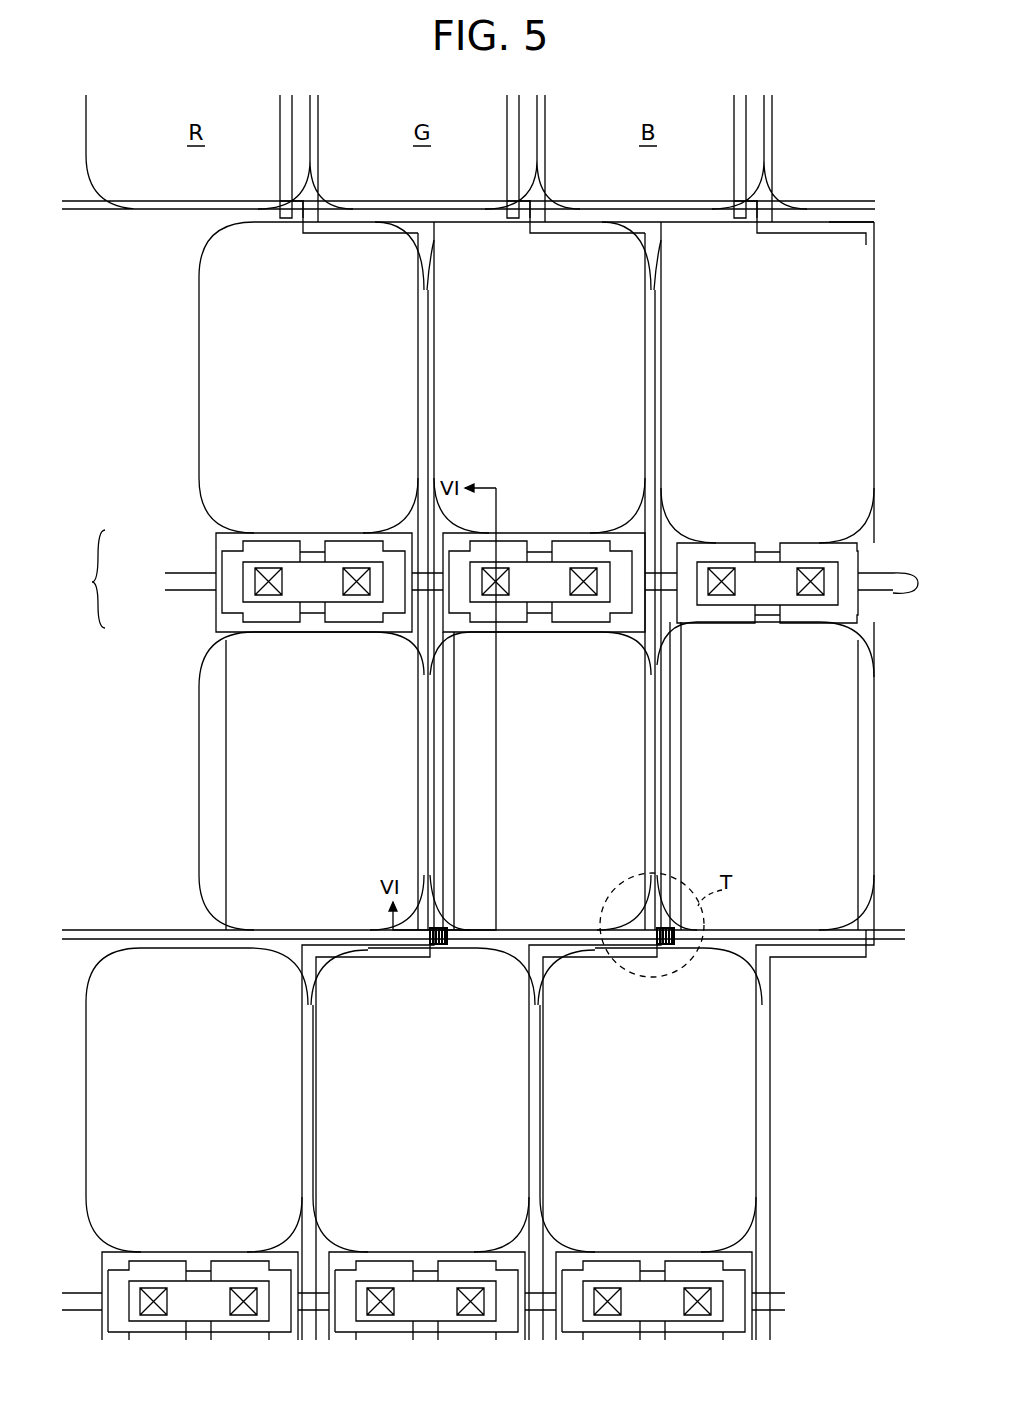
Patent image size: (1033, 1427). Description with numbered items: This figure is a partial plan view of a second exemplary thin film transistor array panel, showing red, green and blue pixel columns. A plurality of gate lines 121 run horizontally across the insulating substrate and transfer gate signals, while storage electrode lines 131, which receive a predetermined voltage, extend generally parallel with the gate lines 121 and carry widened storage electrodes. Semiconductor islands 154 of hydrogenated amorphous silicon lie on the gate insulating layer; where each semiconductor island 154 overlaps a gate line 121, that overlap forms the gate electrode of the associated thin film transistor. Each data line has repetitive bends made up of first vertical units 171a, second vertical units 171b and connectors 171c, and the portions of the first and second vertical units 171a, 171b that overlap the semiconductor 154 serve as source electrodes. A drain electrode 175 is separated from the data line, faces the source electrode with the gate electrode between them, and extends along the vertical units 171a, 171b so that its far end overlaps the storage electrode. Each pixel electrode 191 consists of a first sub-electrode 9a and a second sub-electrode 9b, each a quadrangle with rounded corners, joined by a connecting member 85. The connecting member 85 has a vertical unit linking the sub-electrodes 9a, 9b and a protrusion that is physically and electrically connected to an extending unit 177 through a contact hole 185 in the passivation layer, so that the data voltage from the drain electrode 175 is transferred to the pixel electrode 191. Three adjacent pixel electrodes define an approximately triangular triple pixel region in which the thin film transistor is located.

The gate line 121 is at (80, 930).
The storage electrode line 131 is at (893, 573).
The semiconductor island 154 is at (436, 926).
The first vertical unit 171a is at (428, 740).
The second vertical unit 171b is at (302, 1080).
The connector 171c is at (320, 236).
The drain electrode 175 is at (455, 735).
The extending unit 177 is at (553, 634).
The contact hole 185 is at (262, 568).
The pixel electrode 191 is at (82, 579).
The connecting member 85 is at (243, 584).
The first sub-electrode 9a is at (199, 660).
The second sub-electrode 9b is at (199, 512).